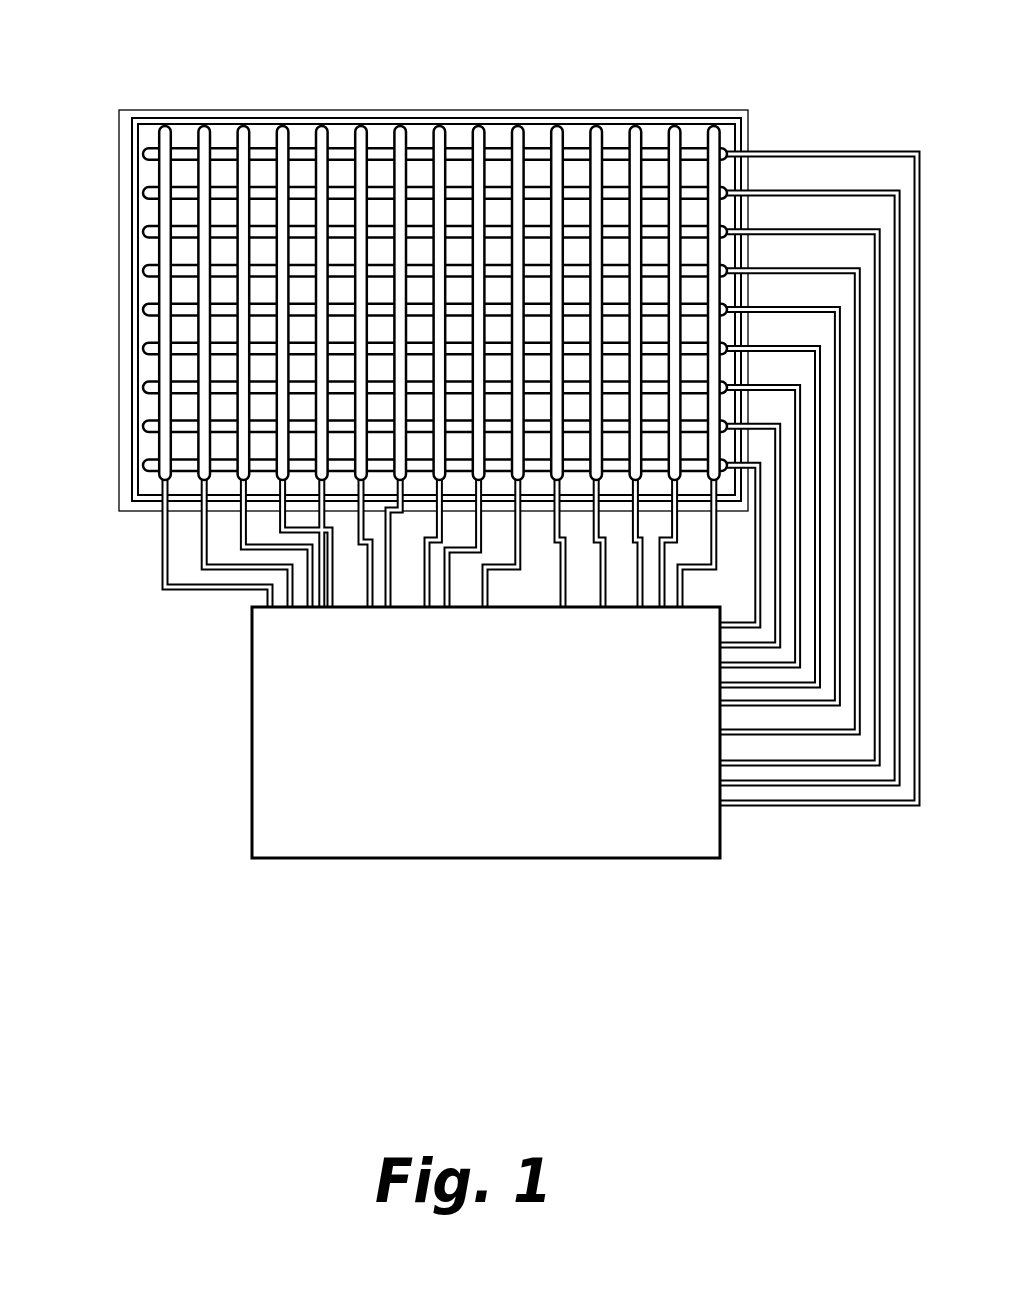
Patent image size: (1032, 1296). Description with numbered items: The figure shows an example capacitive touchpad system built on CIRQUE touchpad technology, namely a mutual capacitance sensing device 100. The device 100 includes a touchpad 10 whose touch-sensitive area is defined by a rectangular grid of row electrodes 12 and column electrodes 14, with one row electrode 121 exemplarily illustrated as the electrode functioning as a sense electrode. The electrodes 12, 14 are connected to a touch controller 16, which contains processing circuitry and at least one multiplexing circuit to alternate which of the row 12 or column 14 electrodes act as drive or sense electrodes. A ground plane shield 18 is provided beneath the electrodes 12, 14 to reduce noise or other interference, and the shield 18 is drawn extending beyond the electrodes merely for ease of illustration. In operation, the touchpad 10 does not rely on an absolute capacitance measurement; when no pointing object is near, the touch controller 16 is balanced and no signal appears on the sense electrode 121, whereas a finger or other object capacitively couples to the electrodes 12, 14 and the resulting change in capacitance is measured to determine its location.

The mutual capacitance sensing device 100 is at (108, 57).
The touchpad 10 is at (735, 118).
The row electrodes 12 is at (77, 131).
The row electrode 121 is at (138, 362).
The column electrodes 14 is at (722, 101).
The touch controller 16 is at (486, 732).
The ground plane shield 18 is at (748, 118).